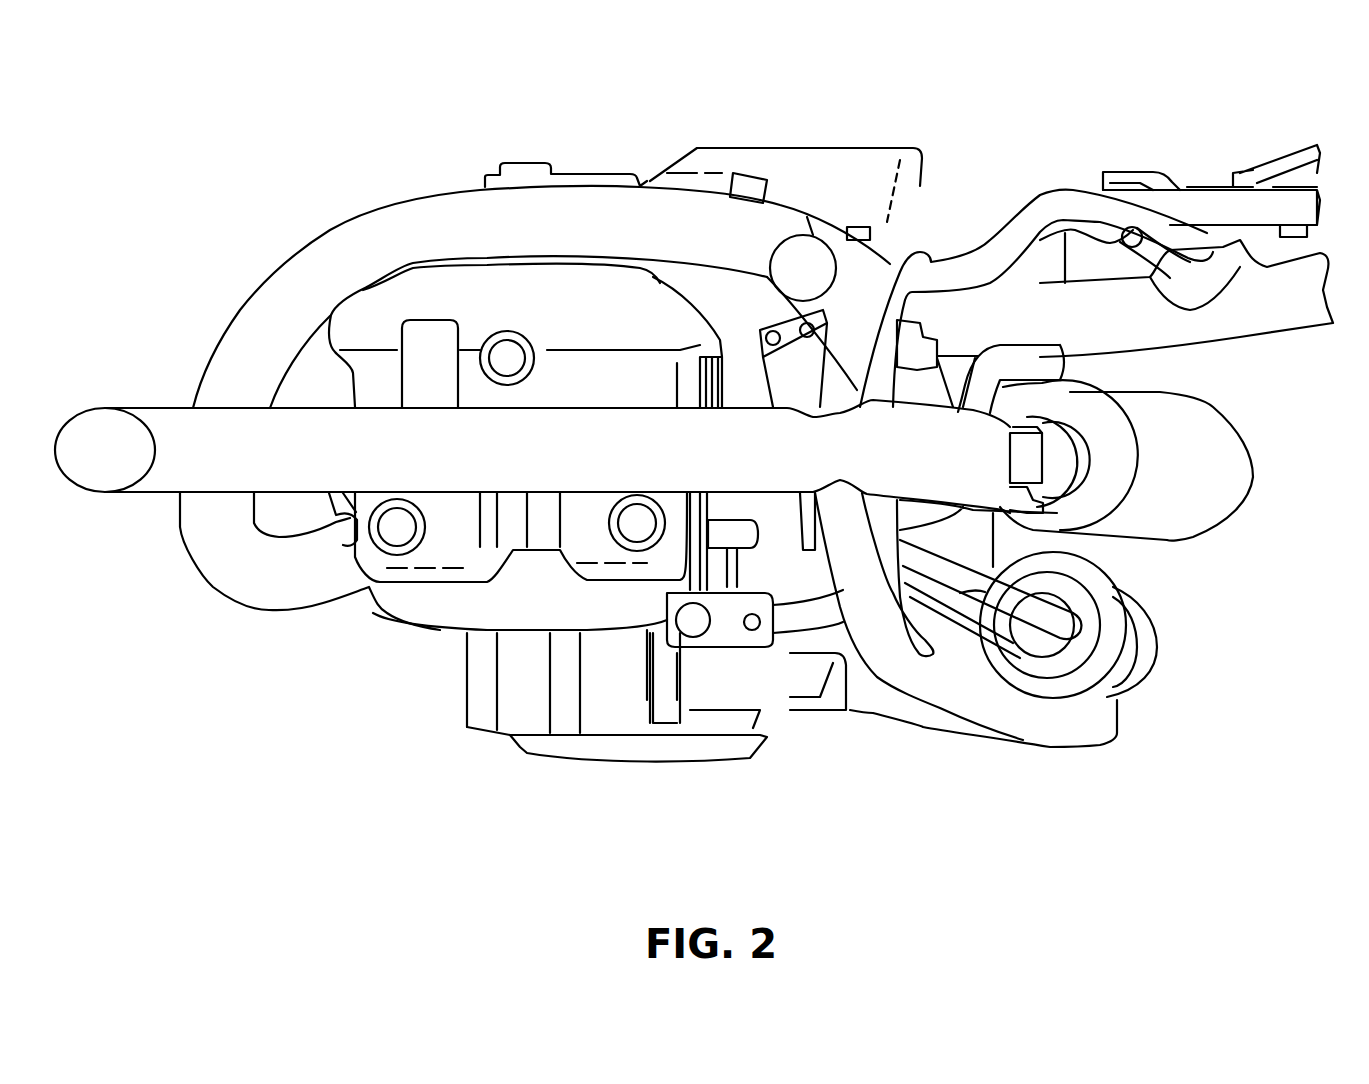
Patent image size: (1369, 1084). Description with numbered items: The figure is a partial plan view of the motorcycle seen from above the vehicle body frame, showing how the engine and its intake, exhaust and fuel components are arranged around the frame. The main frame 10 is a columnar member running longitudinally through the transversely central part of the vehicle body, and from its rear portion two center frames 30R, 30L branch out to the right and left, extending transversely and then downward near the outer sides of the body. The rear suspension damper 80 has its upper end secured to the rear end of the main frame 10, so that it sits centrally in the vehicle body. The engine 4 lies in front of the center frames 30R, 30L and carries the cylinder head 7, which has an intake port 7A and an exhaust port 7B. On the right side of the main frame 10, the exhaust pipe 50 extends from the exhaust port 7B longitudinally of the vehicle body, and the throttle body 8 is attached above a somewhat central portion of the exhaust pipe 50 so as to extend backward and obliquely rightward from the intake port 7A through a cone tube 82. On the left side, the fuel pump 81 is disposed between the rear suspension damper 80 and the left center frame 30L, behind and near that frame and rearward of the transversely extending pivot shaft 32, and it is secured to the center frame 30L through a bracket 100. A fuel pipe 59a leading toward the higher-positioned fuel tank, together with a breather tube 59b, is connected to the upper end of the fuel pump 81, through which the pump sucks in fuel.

The main frame 10 is at (307, 420).
The intake port 7A is at (720, 352).
The cylinder head 7 is at (443, 553).
The exhaust port 7B is at (338, 543).
The engine 4 is at (518, 717).
The throttle body 8 is at (803, 372).
The cone tube 82 is at (748, 365).
The right center frame 30R is at (980, 212).
The left center frame 30L is at (988, 707).
The exhaust pipe 50 is at (1257, 327).
The rear suspension damper 80 is at (1223, 467).
The pivot shaft 32 is at (1030, 543).
The bracket 100 is at (1133, 643).
The fuel pump 81 is at (1137, 673).
The fuel pipe 59a is at (987, 600).
The breather tube 59b is at (1060, 582).